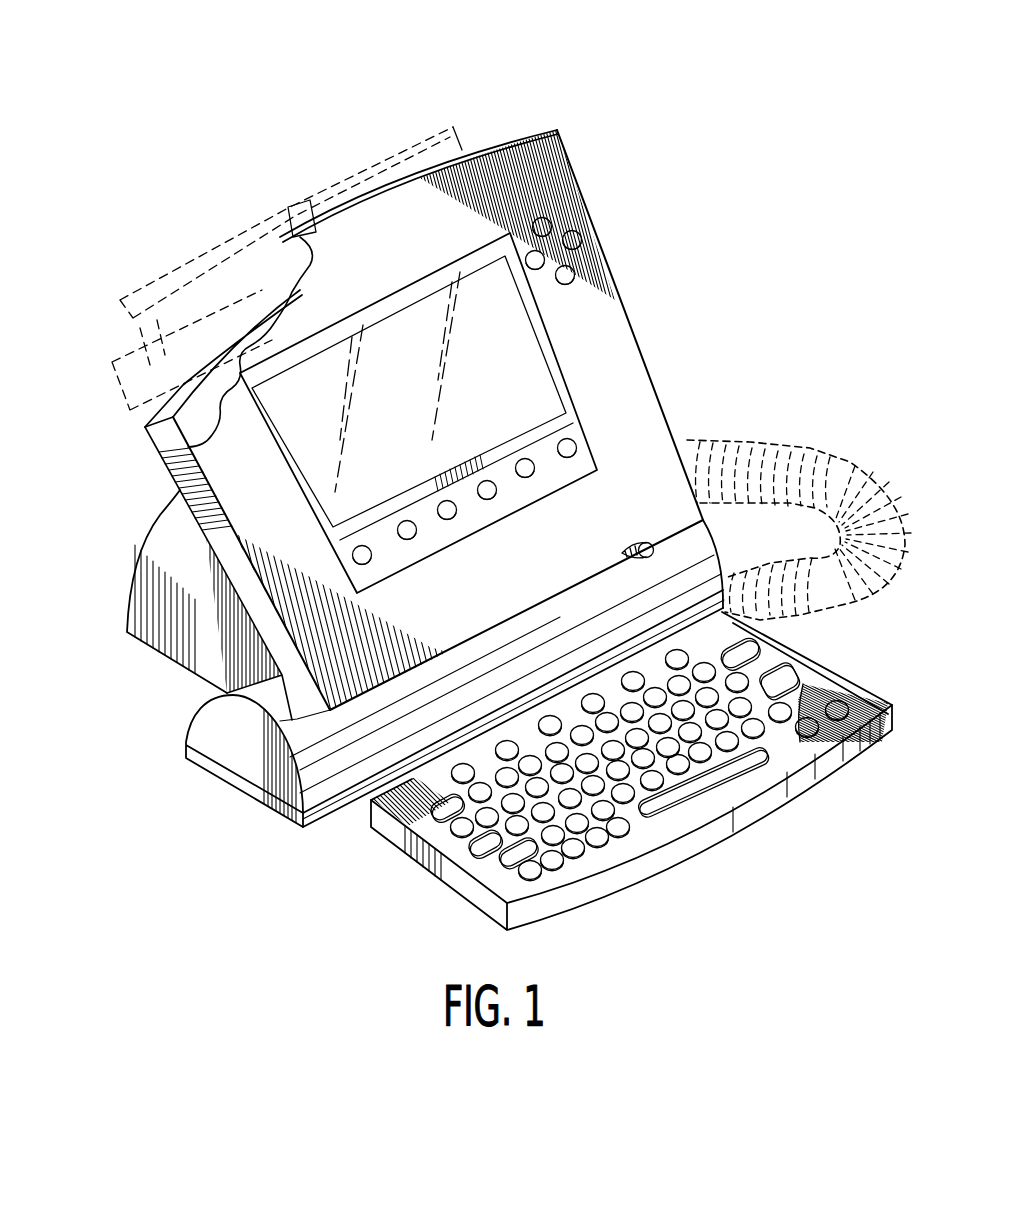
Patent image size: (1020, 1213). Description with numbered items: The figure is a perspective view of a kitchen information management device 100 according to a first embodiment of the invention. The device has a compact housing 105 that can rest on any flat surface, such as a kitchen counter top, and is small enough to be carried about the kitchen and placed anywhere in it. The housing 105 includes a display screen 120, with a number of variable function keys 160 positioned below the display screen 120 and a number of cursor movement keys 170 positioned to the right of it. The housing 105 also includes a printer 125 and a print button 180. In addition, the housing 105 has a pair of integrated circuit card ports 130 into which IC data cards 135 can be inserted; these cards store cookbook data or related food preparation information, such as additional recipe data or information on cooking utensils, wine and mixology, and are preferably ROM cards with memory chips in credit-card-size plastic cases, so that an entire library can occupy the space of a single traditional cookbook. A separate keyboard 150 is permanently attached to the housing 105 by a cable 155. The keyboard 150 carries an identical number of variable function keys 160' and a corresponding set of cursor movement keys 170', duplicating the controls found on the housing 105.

The kitchen information management device 100 is at (549, 101).
The housing 105 is at (627, 317).
The display screen 120 is at (390, 322).
The printer 125 is at (147, 537).
The integrated circuit (IC) card ports 130 is at (207, 345).
The IC data cards 135 is at (342, 181).
The keyboard 150 is at (682, 862).
The cable 155 is at (864, 462).
The variable function keys 160 is at (503, 484).
The variable function keys 160' is at (674, 697).
The cursor movement keys 170 is at (600, 218).
The cursor movement keys 170' is at (840, 705).
The print button 180 is at (645, 544).